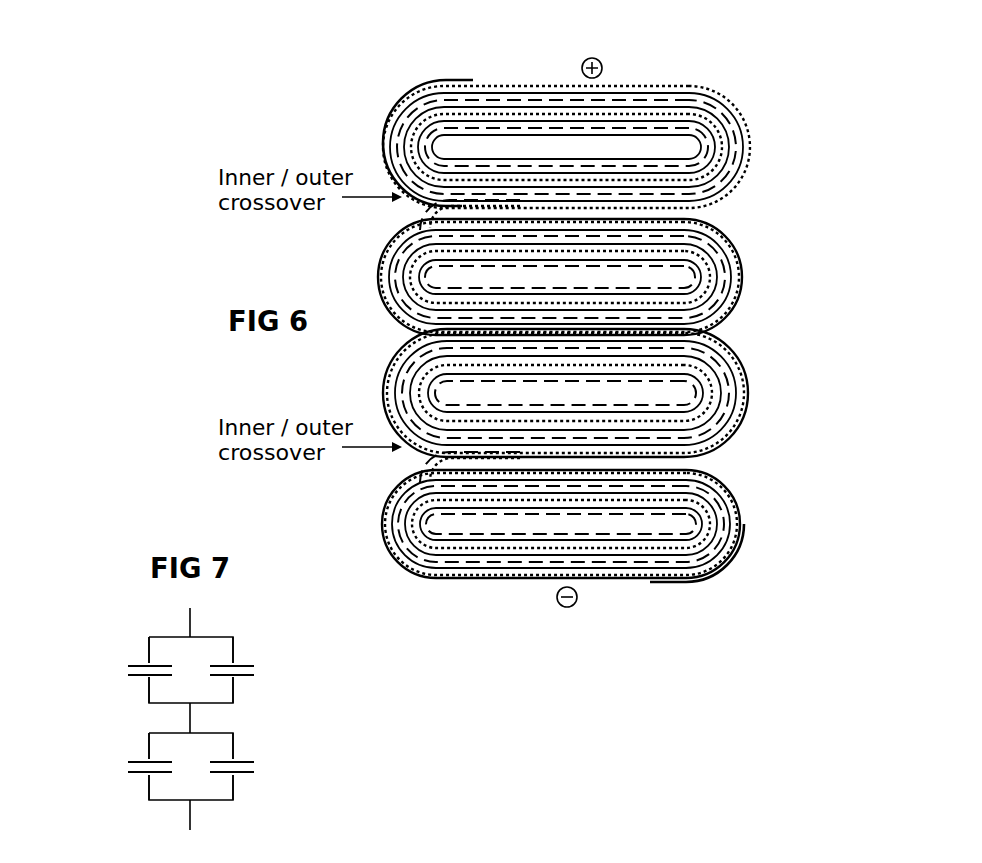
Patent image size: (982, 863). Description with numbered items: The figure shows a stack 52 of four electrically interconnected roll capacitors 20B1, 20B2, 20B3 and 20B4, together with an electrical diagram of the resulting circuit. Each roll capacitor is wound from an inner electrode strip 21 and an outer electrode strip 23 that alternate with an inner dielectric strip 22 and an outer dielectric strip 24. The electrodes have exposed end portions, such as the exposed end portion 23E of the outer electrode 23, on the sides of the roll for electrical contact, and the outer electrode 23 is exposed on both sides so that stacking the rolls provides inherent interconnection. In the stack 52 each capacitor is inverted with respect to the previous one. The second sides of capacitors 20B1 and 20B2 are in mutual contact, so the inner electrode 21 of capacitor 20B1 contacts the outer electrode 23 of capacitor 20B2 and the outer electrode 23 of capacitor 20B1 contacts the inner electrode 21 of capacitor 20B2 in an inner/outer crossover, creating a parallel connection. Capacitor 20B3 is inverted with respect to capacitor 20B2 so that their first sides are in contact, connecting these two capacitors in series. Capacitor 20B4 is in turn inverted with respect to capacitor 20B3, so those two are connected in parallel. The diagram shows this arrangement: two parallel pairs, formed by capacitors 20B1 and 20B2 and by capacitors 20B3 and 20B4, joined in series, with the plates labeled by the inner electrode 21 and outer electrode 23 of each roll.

In FIG. 6, the inner electrode strip 21 is at (508, 92).
In FIG. 7, the inner electrode strip 21 is at (135, 682).
In FIG. 6, the inner dielectric strip 22 is at (547, 86).
In FIG. 6, the outer electrode strip 23 is at (390, 118).
In FIG. 7, the outer electrode strip 23 is at (135, 660).
In FIG. 6, the exposed end portion of outer electrode 23E is at (628, 86).
In FIG. 6, the outer dielectric strip 24 is at (450, 78).
In FIG. 6, the stack 52 is at (740, 65).
In FIG. 6, the roll capacitor 20B1 is at (752, 107).
In FIG. 7, the roll capacitor 20B1 is at (108, 670).
In FIG. 6, the roll capacitor 20B2 is at (754, 250).
In FIG. 7, the roll capacitor 20B2 is at (273, 670).
In FIG. 6, the roll capacitor 20B3 is at (754, 360).
In FIG. 7, the roll capacitor 20B3 is at (108, 767).
In FIG. 6, the roll capacitor 20B4 is at (754, 502).
In FIG. 7, the roll capacitor 20B4 is at (273, 767).